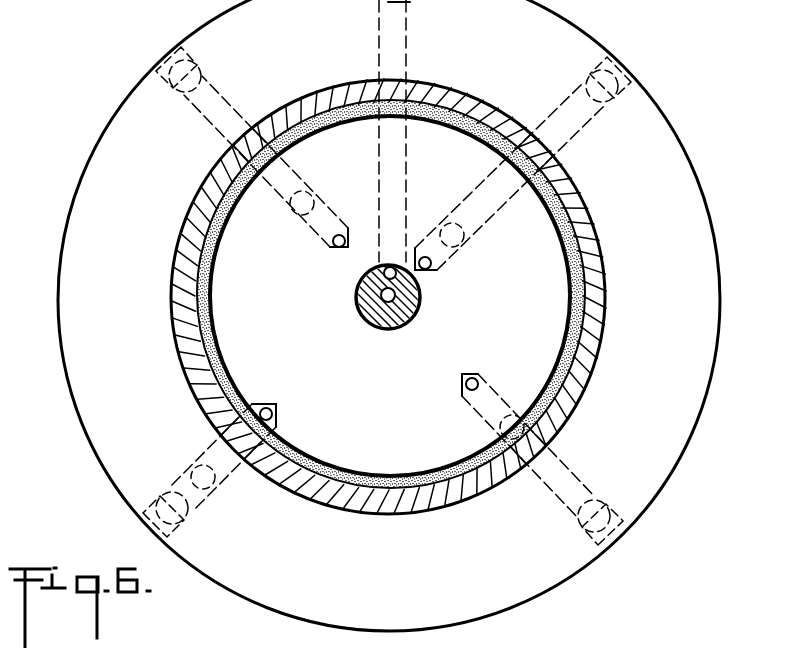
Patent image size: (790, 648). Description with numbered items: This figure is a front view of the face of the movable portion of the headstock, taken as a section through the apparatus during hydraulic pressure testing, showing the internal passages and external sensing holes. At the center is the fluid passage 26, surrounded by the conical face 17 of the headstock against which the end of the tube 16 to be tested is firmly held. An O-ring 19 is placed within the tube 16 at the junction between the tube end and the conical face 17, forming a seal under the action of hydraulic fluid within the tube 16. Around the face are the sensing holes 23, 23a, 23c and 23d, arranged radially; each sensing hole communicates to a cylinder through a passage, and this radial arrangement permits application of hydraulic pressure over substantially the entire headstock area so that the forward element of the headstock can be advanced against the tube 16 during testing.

The tube 16 is at (585, 226).
The conical face 17 is at (623, 397).
The O-ring 19 is at (320, 114).
The sensing hole 23 is at (270, 408).
The sensing hole 23a is at (334, 245).
The sensing hole 23c is at (477, 379).
The tie rod 23d is at (432, 263).
The fluid passage 26 is at (421, 298).